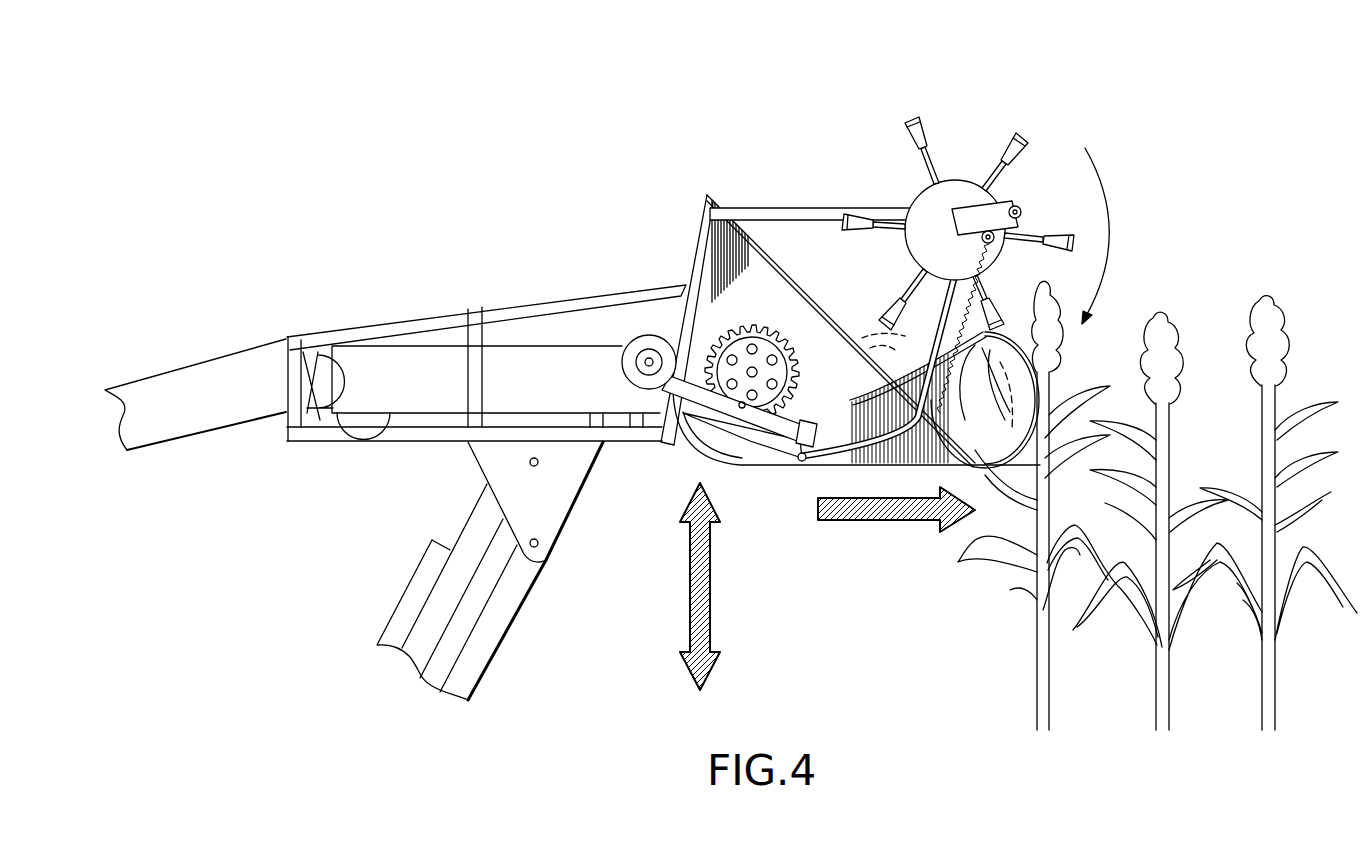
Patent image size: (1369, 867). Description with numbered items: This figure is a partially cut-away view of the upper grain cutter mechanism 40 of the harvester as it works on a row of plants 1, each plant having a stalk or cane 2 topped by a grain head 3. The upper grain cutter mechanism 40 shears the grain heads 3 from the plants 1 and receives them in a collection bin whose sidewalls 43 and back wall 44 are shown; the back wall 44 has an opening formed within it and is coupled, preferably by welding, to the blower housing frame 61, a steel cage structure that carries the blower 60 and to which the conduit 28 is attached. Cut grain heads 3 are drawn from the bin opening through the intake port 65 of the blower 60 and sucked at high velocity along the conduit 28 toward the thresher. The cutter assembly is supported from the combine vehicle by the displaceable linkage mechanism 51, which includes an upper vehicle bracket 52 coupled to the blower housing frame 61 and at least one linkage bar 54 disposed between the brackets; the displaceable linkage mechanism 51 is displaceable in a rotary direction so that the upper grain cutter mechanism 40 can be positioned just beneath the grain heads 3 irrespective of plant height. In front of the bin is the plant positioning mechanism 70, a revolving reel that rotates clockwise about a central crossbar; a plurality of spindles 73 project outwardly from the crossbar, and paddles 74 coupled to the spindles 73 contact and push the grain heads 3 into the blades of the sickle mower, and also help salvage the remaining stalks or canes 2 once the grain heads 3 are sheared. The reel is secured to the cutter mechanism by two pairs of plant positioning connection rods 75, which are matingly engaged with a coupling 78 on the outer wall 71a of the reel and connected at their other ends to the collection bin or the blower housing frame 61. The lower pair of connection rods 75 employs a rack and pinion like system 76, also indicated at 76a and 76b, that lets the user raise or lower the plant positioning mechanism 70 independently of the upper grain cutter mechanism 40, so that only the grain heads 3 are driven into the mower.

The plant 1 is at (1050, 690).
The stalk or cane 2 is at (1047, 520).
The grain head 3 is at (1065, 341).
The conduit 28 is at (200, 378).
The upper grain cutter mechanism 40 is at (881, 257).
The sidewalls 43 is at (707, 253).
The back wall 44 is at (705, 215).
The displaceable linkage mechanism 51 is at (520, 603).
The upper vehicle bracket 52 is at (548, 512).
The linkage bar 54 is at (483, 648).
The blower 60 is at (543, 358).
The blower housing frame 61 is at (413, 330).
The intake port 65 is at (306, 350).
The plant positioning mechanism 70 is at (999, 229).
The outer wall of the revolving reel 71a is at (915, 205).
The spindles 73 is at (977, 195).
The paddles 74 is at (933, 168).
The plant positioning connection rods 75 is at (732, 207).
The rack and pinion like system 76 is at (1020, 265).
The tine 76a is at (953, 312).
The tine 76b is at (1025, 207).
The coupling 78 is at (990, 180).